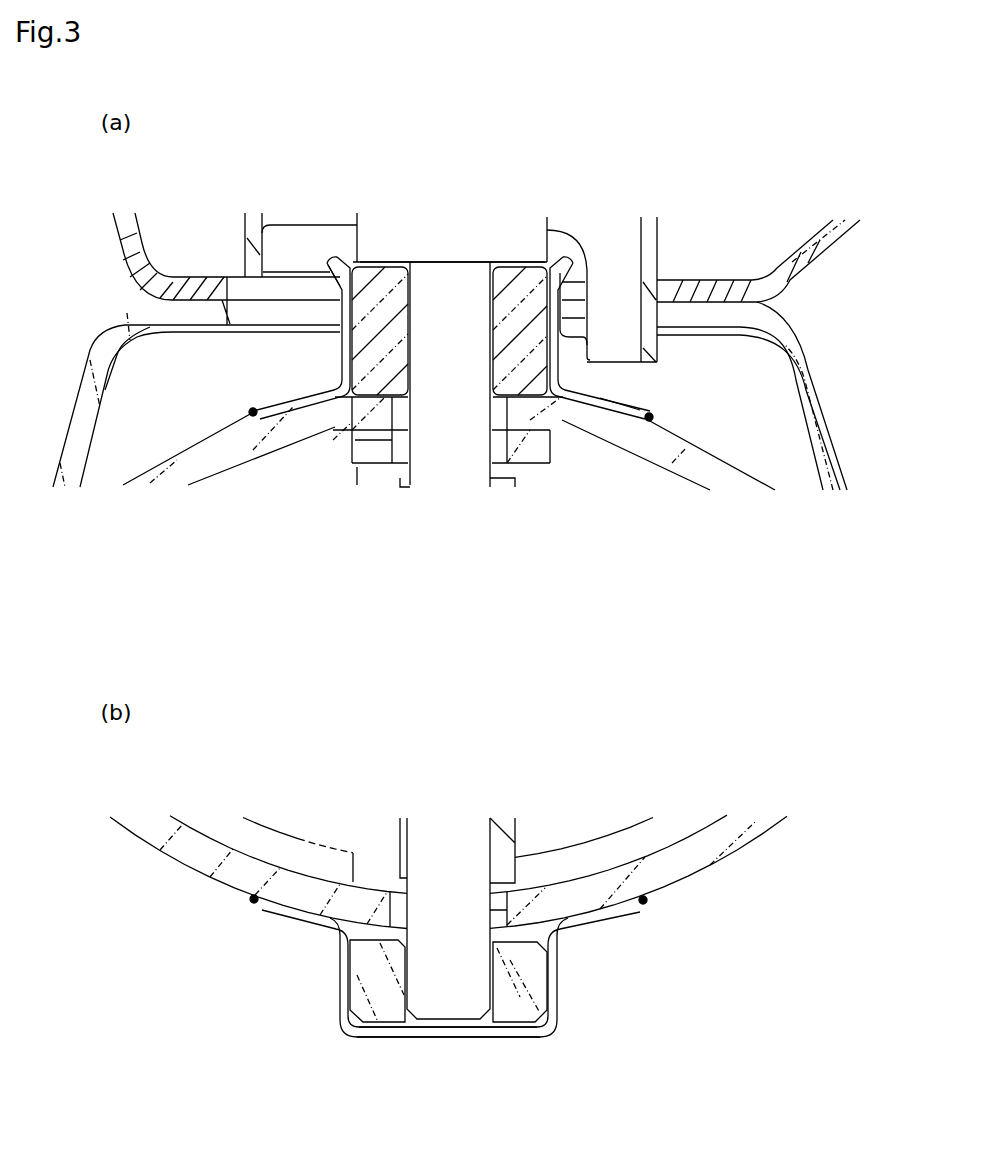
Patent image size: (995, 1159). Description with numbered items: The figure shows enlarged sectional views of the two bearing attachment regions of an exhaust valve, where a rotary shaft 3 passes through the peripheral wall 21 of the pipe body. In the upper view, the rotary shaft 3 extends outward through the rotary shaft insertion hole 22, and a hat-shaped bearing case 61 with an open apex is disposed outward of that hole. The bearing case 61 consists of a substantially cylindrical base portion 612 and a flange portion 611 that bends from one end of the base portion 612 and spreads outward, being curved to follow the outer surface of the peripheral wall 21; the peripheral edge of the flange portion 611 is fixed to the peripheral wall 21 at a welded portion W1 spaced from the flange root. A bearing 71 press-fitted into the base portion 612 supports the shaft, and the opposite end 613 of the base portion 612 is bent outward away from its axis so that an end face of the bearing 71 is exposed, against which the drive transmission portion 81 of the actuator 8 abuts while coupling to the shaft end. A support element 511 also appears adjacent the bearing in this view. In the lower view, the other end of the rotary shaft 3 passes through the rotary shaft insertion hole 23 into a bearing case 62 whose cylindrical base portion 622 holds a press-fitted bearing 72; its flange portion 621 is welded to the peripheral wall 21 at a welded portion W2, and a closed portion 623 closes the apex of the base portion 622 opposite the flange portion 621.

In FIG. 3a, the rotary shaft 3 is at (452, 436).
In FIG. 3b, the rotary shaft 3 is at (442, 867).
In FIG. 3a, the actuator 8 is at (822, 250).
In FIG. 3a, the drive transmission portion 81 is at (483, 236).
In FIG. 3a, the peripheral wall 21 is at (725, 467).
In FIG. 3b, the peripheral wall 21 is at (724, 860).
In FIG. 3a, the rotary shaft insertion hole 22 is at (508, 420).
In FIG. 3b, the rotary shaft insertion hole 23 is at (563, 920).
In FIG. 3a, the bearing case 61 is at (418, 319).
In FIG. 3a, the flange portion 611 is at (613, 408).
In FIG. 3a, the base portion 612 is at (588, 338).
In FIG. 3a, the opposite end 613 is at (333, 258).
In FIG. 3b, the bearing case 62 is at (432, 1007).
In FIG. 3b, the flange portion 621 is at (288, 918).
In FIG. 3b, the base portion 622 is at (560, 997).
In FIG. 3b, the closed portion 623 is at (431, 1030).
In FIG. 3a, the bearing 71 is at (378, 268).
In FIG. 3b, the bearing 72 is at (511, 1003).
In FIG. 3a, the support plate 511 is at (355, 441).
In FIG. 3a, the welded portion W1 is at (248, 414).
In FIG. 3b, the welded portion W2 is at (250, 899).